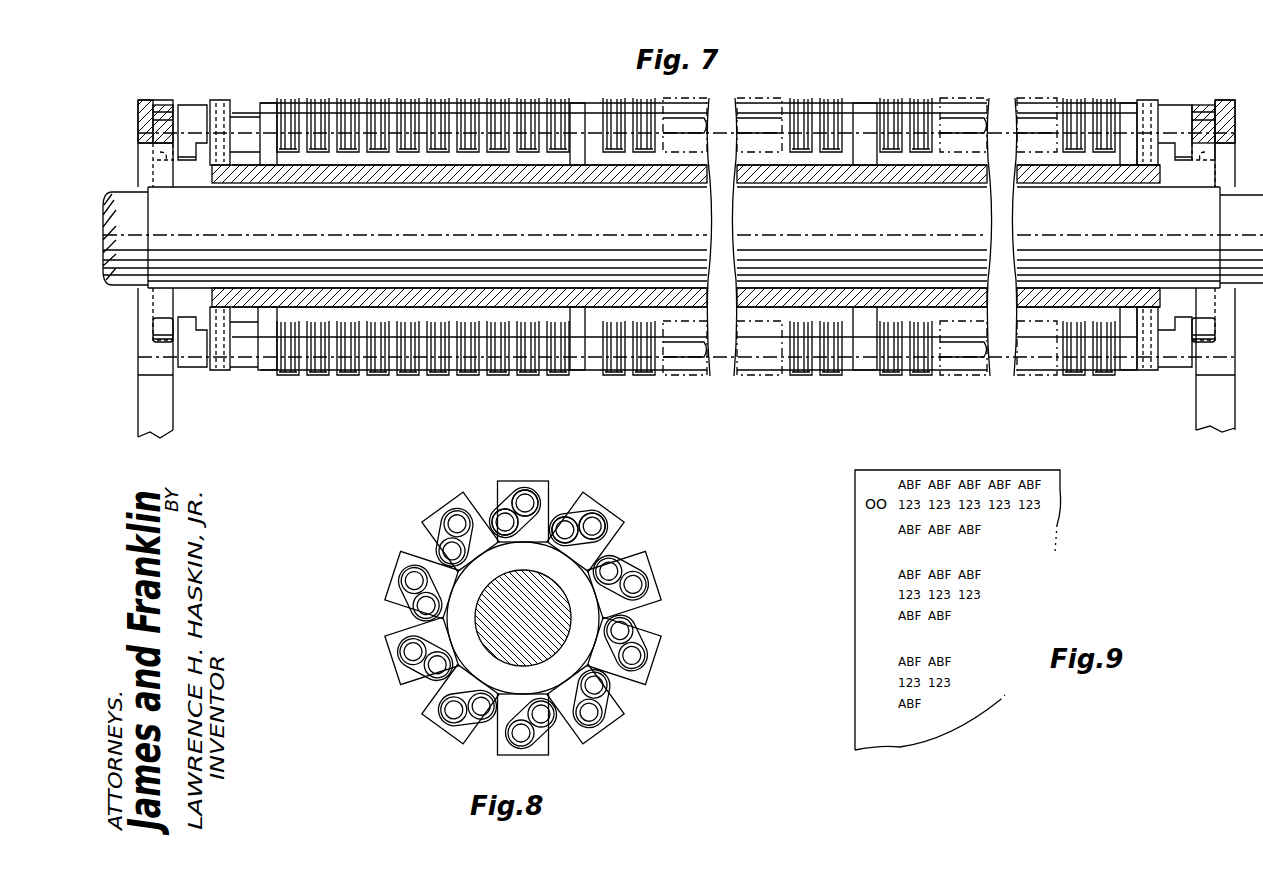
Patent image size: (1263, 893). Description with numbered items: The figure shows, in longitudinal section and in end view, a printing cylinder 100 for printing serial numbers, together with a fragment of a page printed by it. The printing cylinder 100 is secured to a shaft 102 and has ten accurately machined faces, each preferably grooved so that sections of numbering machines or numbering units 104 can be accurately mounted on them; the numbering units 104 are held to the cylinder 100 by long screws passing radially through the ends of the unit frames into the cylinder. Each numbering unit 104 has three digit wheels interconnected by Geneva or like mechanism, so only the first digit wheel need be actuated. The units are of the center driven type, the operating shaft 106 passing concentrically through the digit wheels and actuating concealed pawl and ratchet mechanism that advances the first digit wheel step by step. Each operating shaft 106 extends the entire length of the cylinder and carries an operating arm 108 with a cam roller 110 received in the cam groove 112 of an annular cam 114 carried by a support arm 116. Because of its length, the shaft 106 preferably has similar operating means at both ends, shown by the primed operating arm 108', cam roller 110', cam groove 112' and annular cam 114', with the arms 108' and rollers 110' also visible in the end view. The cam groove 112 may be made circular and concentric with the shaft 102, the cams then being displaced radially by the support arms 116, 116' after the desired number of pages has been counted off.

In FIG. 7, the printing cylinder 100 is at (1114, 184).
In FIG. 8, the printing cylinder 100 is at (545, 565).
In FIG. 8, the shaft 102 is at (495, 638).
In FIG. 7, the numbering units 104 is at (270, 103).
In FIG. 8, the numbering units 104 is at (612, 525).
In FIG. 7, the operating shaft 106 is at (243, 115).
In FIG. 7, the operating arm 108 is at (1164, 235).
In FIG. 7, the operating arm 108' is at (203, 235).
In FIG. 8, the operating arm 108' is at (564, 496).
In FIG. 7, the cam roller 110 is at (1227, 242).
In FIG. 7, the cam roller 110' is at (138, 242).
In FIG. 8, the cam roller 110' is at (529, 500).
In FIG. 7, the cam groove 112 is at (1219, 102).
In FIG. 7, the cam groove 112' is at (173, 108).
In FIG. 7, the annular cam 114 is at (1229, 265).
In FIG. 7, the annular cam 114' is at (142, 255).
In FIG. 7, the support arm 116 is at (1227, 394).
In FIG. 7, the support arm 116' is at (182, 407).